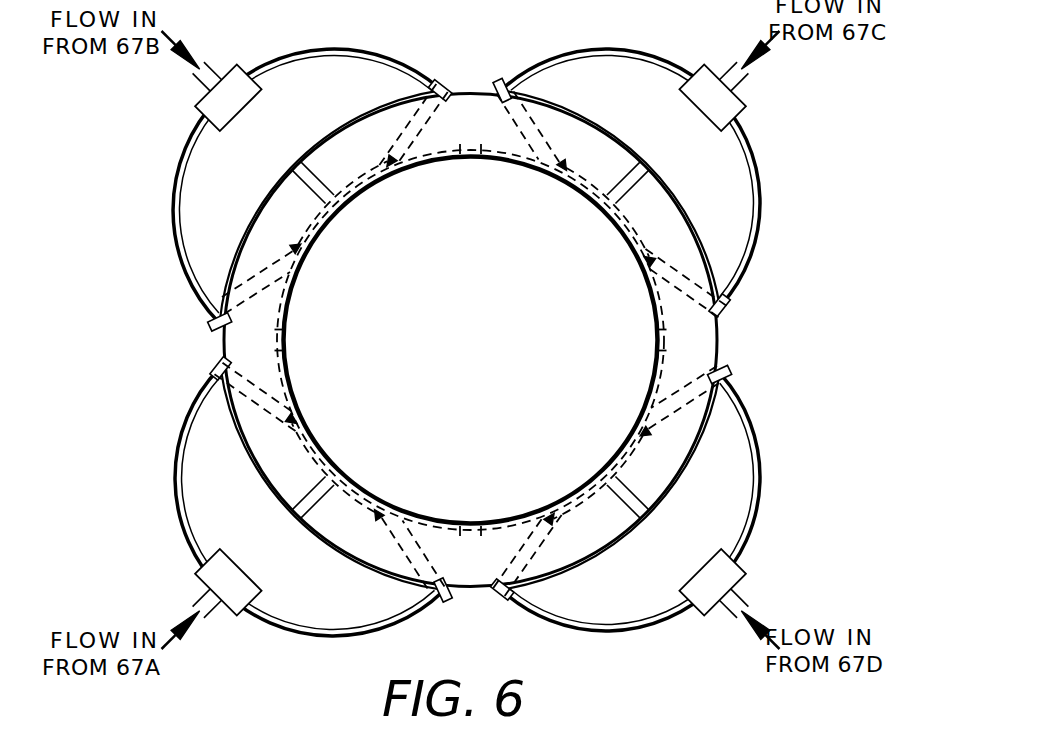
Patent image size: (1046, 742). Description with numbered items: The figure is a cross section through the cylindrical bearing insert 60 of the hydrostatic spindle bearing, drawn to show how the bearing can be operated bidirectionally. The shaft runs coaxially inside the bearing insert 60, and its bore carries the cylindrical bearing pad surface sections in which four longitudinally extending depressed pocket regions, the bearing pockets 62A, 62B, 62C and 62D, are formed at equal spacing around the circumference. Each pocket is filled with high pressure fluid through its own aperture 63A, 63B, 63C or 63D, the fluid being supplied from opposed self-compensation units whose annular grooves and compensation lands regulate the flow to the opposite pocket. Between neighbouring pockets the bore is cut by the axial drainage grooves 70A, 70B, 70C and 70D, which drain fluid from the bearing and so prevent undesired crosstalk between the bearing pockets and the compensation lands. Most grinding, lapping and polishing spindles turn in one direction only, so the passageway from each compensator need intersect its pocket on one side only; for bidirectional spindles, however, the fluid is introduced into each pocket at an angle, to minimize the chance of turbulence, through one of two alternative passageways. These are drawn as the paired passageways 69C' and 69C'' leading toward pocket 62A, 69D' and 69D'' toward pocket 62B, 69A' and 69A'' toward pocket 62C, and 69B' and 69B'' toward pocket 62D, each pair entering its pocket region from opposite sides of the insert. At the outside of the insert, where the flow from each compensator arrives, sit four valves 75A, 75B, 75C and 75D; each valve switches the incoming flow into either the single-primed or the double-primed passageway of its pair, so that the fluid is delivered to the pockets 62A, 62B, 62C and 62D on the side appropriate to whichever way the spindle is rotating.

The outer cylindrical bearing insert 60 is at (469, 107).
The bearing pocket 62A is at (586, 200).
The bearing pocket 62B is at (622, 458).
The bearing pocket 62C is at (318, 458).
The bearing pocket 62D is at (312, 226).
The aperture 63A is at (553, 178).
The aperture 63B is at (643, 421).
The aperture 63C is at (386, 517).
The aperture 63D is at (308, 256).
The flow passage 69A' is at (294, 398).
The flow passage 69A'' is at (373, 552).
The flow passage 69B' is at (390, 125).
The flow passage 69B'' is at (243, 273).
The flow passage 69C' is at (692, 259).
The flow passage 69C'' is at (560, 122).
The flow passage 69D' is at (558, 562).
The flow passage 69D'' is at (645, 397).
The axial drainage groove 70A is at (657, 348).
The axial drainage groove 70B is at (465, 528).
The axial drainage groove 70C is at (283, 339).
The axial drainage groove 70D is at (468, 156).
The valve 75A is at (694, 104).
The valve 75B is at (708, 578).
The valve 75C is at (234, 560).
The valve 75D is at (237, 108).